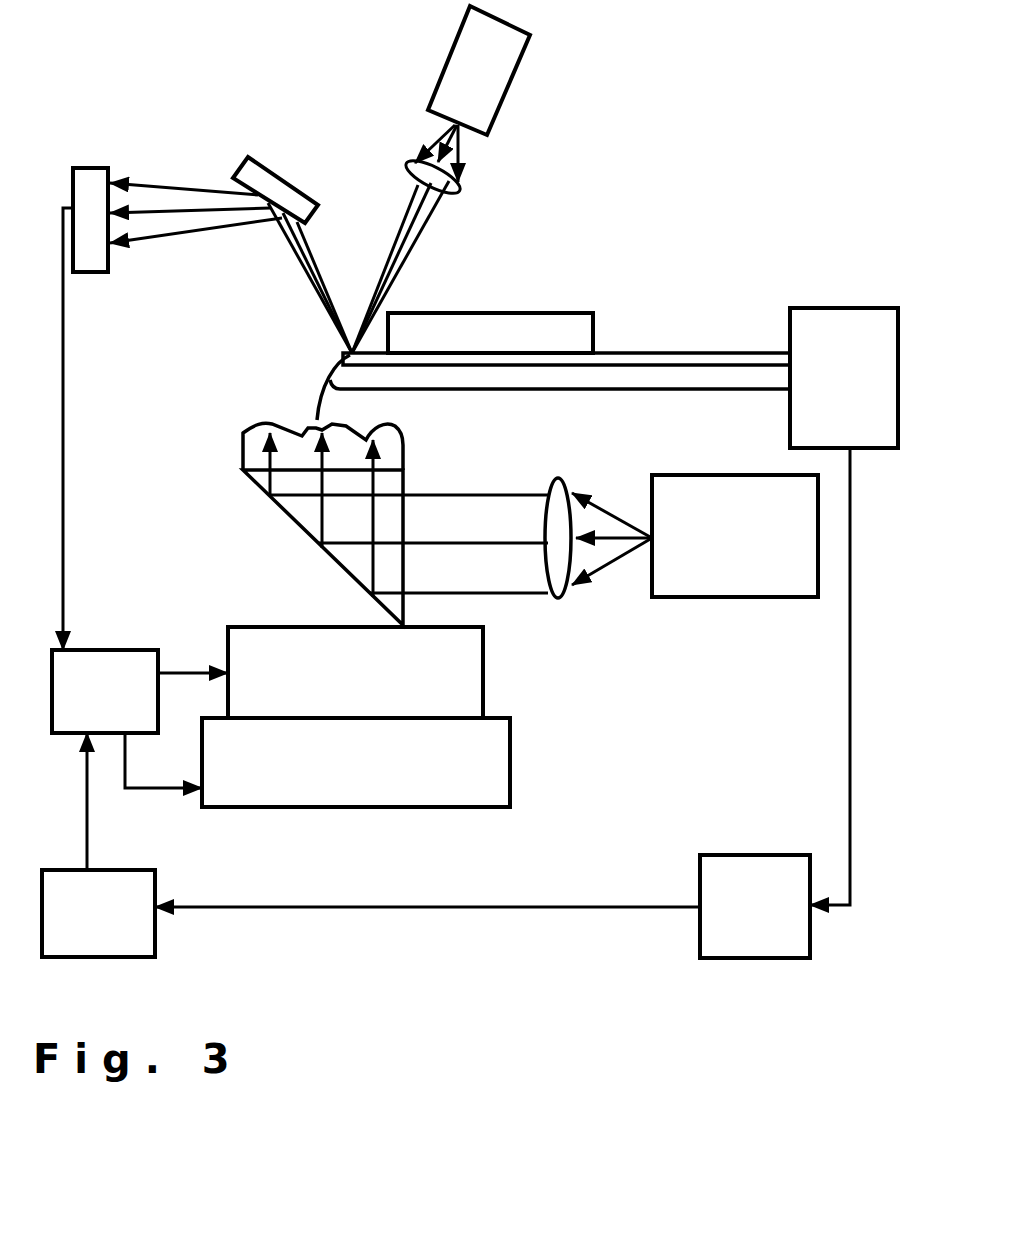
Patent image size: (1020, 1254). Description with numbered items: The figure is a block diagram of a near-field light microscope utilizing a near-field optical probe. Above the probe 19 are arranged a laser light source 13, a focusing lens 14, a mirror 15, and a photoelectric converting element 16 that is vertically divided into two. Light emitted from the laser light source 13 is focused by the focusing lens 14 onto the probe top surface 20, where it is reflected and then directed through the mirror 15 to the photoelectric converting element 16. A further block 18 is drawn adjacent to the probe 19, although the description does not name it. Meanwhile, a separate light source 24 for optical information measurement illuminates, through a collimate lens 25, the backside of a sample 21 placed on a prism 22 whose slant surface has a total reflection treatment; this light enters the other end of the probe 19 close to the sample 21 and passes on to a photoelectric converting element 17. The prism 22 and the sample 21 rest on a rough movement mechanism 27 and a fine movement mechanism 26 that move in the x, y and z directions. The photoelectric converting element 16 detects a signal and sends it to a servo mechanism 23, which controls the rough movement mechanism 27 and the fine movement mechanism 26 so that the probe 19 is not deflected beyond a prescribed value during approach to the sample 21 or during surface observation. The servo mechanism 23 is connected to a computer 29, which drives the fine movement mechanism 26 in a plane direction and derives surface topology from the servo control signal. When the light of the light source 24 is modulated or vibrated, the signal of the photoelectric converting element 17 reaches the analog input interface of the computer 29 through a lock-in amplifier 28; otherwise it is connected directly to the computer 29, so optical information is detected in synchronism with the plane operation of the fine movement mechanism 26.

The laser light source 13 is at (490, 83).
The focusing lens 14 is at (440, 182).
The mirror 15 is at (252, 178).
The photoelectric converting element 16 is at (90, 185).
The photoelectric converting element 17 is at (867, 333).
The sample 18 is at (530, 332).
The probe 19 is at (630, 377).
The probe top surface 20 is at (342, 353).
The sample 21 is at (250, 452).
The prism 22 is at (307, 508).
The servo mechanism 23 is at (78, 673).
The light source 24 is at (722, 558).
The collimate lens 25 is at (560, 568).
The fine movement mechanism 26 is at (452, 675).
The rough movement mechanism 27 is at (478, 770).
The lock-in amplifier 28 is at (777, 875).
The computer 29 is at (127, 898).